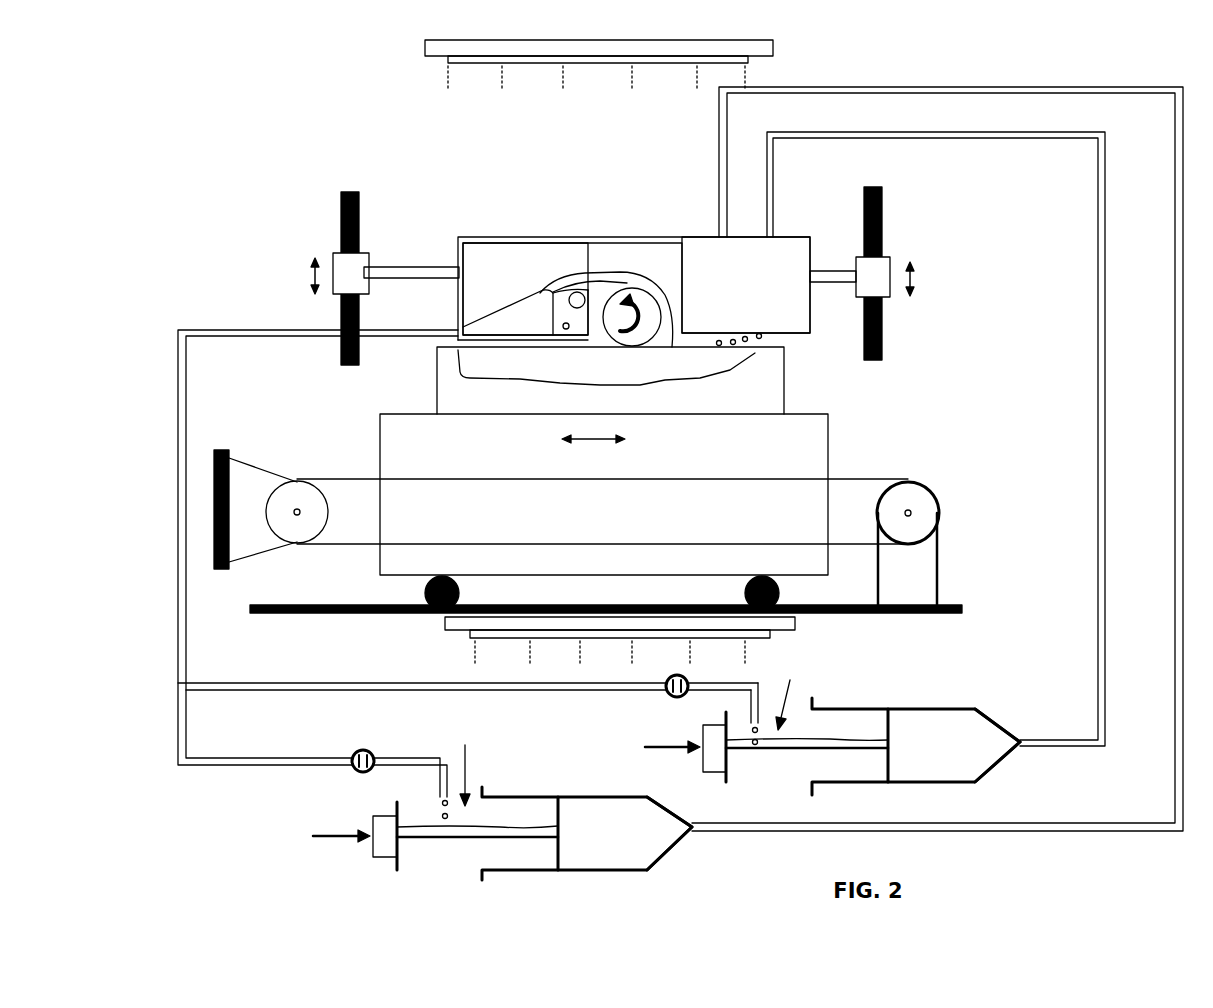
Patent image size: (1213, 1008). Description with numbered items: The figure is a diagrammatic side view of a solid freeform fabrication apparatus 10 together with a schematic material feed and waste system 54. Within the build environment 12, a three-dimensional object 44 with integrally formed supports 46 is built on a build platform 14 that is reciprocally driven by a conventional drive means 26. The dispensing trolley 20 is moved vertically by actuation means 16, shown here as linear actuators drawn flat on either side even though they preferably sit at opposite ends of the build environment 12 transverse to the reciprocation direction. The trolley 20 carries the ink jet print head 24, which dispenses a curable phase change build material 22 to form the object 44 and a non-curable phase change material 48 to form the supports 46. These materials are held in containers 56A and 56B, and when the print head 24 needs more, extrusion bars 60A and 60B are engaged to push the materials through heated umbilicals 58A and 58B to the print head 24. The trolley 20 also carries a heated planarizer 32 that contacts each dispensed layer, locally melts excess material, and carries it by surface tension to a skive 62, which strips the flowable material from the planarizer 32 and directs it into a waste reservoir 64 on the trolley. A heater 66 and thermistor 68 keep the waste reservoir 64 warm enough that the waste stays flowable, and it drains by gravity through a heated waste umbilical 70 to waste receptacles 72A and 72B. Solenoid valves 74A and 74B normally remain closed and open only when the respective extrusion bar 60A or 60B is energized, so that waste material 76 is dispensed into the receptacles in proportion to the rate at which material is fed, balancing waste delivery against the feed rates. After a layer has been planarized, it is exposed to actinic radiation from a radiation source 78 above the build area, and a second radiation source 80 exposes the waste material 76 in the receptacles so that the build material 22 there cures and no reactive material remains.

The solid freeform fabrication apparatus 10 is at (296, 176).
The build environment 12 is at (587, 251).
The build platform 14 is at (737, 457).
The actuation means 16 is at (340, 233).
The dispensing trolley 20 is at (687, 235).
The curable phase change build material 22 is at (978, 749).
The print head 24 is at (780, 252).
The conventional drive means 26 is at (917, 478).
The heated planarizer 32 is at (632, 296).
The three-dimensional object 44 is at (695, 364).
The supports 46 is at (457, 398).
The non-curable phase change material 48 is at (628, 829).
The material feed and waste system 54 is at (605, 773).
The container 56A is at (839, 731).
The container 56B is at (508, 812).
The umbilical 58A is at (1098, 598).
The umbilical 58B is at (1174, 732).
The extrusion bar 60A is at (703, 770).
The extrusion bar 60B is at (373, 848).
The skive 62 is at (603, 279).
The waste reservoir 64 is at (530, 255).
The heater 66 is at (575, 294).
The thermistor 68 is at (563, 324).
The heated waste umbilical 70 is at (177, 402).
The waste receptacle 72A is at (796, 691).
The waste receptacle 72B is at (465, 762).
The solenoid valve 74A is at (665, 691).
The solenoid valve 74B is at (357, 752).
The waste material 76 is at (543, 292).
The radiation source 78 is at (773, 47).
The second radiation source 80 is at (796, 626).